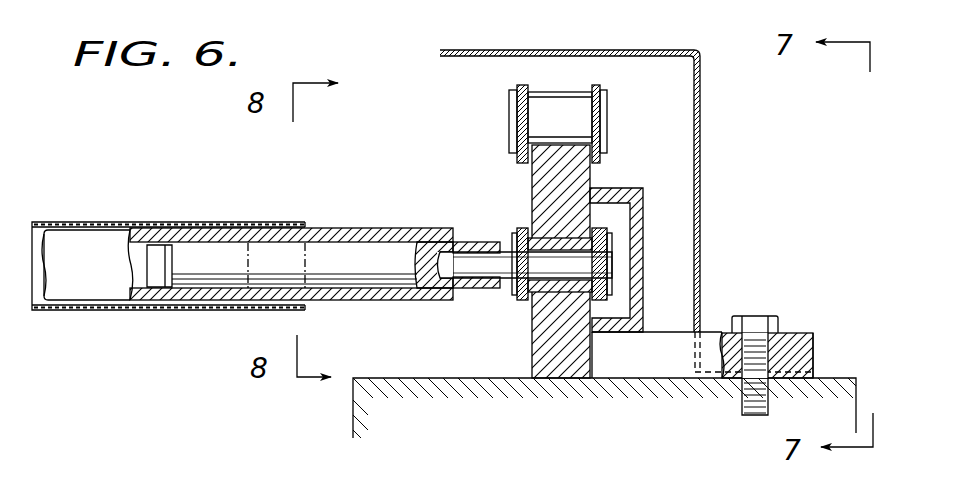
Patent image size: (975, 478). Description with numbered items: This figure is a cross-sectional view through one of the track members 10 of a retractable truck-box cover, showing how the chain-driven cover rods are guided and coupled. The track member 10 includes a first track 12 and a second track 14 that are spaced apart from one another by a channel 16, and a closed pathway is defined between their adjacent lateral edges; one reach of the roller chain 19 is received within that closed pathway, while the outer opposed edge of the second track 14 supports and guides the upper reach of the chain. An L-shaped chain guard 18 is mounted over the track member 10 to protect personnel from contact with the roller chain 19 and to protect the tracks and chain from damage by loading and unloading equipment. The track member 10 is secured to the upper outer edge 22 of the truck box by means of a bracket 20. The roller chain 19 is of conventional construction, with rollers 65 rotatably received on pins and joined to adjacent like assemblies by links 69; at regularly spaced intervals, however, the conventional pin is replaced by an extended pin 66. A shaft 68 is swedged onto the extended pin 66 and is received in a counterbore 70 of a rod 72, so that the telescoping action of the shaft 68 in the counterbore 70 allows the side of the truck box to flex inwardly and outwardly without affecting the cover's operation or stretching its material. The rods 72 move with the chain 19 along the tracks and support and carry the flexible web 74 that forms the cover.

The track member 10 is at (715, 152).
The first track 12 is at (530, 363).
The second track 14 is at (532, 167).
The channel 16 is at (643, 228).
The L-shaped chain guard 18 is at (594, 49).
The roller chain 19 is at (506, 110).
The bracket 20 is at (790, 337).
The upper outer edge of truck box 22 is at (828, 376).
The roller 65 is at (583, 105).
The extended pin 66 is at (485, 280).
The shaft 68 is at (380, 248).
The link 69 is at (604, 310).
The counterbore 70 is at (158, 288).
The rod 72 is at (326, 229).
The flexible web 74 is at (50, 226).